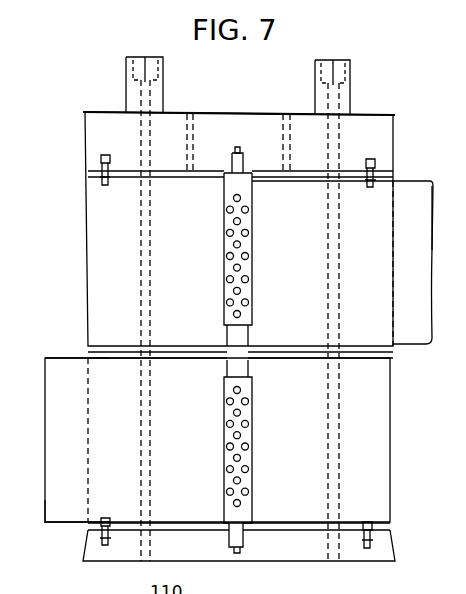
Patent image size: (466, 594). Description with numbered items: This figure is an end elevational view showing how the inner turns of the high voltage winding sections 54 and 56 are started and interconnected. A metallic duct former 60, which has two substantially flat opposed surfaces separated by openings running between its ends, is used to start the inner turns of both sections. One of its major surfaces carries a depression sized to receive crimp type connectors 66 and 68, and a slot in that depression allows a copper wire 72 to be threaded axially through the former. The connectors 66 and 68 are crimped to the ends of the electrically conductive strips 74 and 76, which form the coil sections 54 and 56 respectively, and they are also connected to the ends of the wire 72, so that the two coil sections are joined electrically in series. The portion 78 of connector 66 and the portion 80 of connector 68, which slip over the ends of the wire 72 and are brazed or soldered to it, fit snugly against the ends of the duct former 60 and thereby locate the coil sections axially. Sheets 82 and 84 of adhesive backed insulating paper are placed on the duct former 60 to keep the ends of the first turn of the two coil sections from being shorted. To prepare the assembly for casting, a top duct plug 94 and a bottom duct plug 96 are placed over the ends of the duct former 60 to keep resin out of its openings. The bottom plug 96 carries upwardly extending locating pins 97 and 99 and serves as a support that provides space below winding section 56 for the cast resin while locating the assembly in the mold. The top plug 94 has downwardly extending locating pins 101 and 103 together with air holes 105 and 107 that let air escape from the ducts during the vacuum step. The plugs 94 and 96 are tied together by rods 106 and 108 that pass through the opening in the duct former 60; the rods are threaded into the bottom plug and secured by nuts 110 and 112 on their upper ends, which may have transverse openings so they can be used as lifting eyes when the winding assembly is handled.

The high voltage winding section 54 is at (433, 194).
The high voltage winding section 56 is at (62, 523).
The duct former 60 is at (397, 181).
The connector 66 is at (254, 250).
The connector 68 is at (254, 432).
The copper wire 72 is at (238, 147).
The electrically conductive strip 74 is at (433, 254).
The electrically conductive strip 76 is at (45, 365).
The connector portion 78 is at (244, 164).
The connector portion 80 is at (244, 545).
The insulating sheet 82 is at (105, 217).
The insulating sheet 84 is at (382, 382).
The top duct plug 94 is at (394, 133).
The bottom duct plug 96 is at (393, 543).
The locating pin 97 is at (110, 546).
The locating pin 99 is at (364, 545).
The locating pin 101 is at (100, 162).
The locating pin 103 is at (378, 166).
The air hole 105 is at (192, 117).
The rod 106 is at (140, 264).
The air hole 107 is at (288, 117).
The rod 108 is at (338, 232).
The nut 110 is at (164, 73).
The nut 112 is at (351, 75).